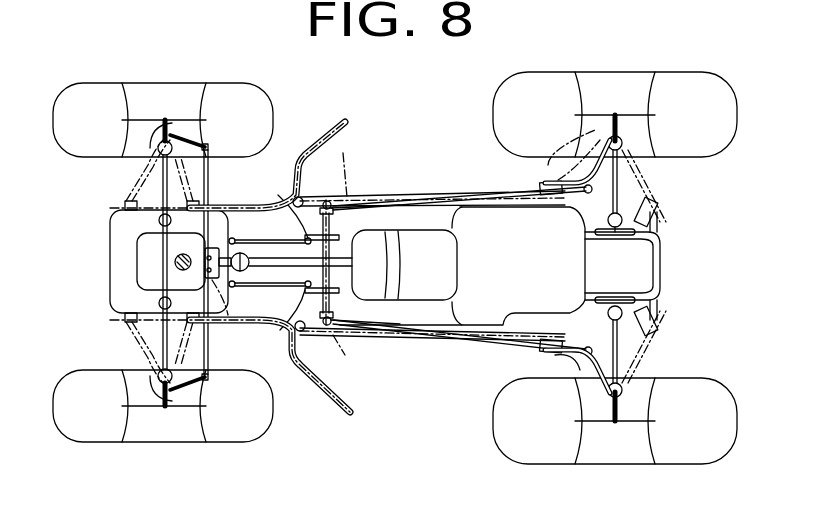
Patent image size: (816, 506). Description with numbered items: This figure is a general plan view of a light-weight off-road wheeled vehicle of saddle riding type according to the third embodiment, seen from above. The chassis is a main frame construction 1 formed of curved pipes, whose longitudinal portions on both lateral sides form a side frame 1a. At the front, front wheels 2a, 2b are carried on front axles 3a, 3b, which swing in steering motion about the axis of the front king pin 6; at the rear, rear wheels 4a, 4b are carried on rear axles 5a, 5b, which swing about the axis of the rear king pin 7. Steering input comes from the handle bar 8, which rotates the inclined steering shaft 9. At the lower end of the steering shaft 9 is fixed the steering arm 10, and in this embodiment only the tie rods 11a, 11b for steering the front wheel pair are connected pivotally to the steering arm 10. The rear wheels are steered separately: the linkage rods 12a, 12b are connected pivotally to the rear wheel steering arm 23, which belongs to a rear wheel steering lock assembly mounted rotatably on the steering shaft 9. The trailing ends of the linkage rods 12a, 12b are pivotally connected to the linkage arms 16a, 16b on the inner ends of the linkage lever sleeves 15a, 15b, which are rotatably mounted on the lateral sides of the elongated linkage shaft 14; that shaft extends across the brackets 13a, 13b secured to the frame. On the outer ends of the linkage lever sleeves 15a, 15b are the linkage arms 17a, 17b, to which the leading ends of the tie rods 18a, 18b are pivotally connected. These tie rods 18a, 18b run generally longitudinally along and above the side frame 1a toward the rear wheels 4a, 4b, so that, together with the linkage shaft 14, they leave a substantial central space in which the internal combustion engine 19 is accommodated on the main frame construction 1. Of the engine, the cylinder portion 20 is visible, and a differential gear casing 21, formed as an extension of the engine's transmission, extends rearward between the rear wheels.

The main frame construction 1 is at (401, 192).
The side frame 1a is at (405, 338).
The front wheel 2a is at (206, 441).
The front wheel 2b is at (163, 86).
The front axle 3a is at (180, 390).
The front axle 3b is at (180, 137).
The rear wheel 4a is at (583, 464).
The rear wheel 4b is at (596, 72).
The rear axle 5a is at (620, 405).
The rear axle 5b is at (622, 128).
The front king pin 6 is at (157, 140).
The rear king pin 7 is at (628, 152).
The handle bar 8 is at (340, 408).
The steering shaft 9 is at (178, 258).
The steering arm 10 is at (150, 262).
The tie rod 11a is at (209, 360).
The tie rod 11b is at (209, 170).
The linkage rod 12a is at (275, 286).
The linkage rod 12b is at (290, 241).
The bracket 13a is at (320, 352).
The bracket 13b is at (352, 168).
The linkage shaft 14 is at (333, 214).
The linkage lever sleeve 15a is at (350, 322).
The linkage lever sleeve 15b is at (348, 210).
The linkage arm 16a is at (290, 325).
The linkage arm 16b is at (280, 200).
The linkage arm 17a is at (335, 330).
The linkage arm 17b is at (310, 205).
The tie rod 18a is at (453, 338).
The tie rod 18b is at (462, 198).
The internal combustion engine 19 is at (502, 325).
The cylinder portion 20 is at (470, 262).
The differential gear casing 21 is at (655, 266).
The rear wheel steering arm 23 is at (226, 309).